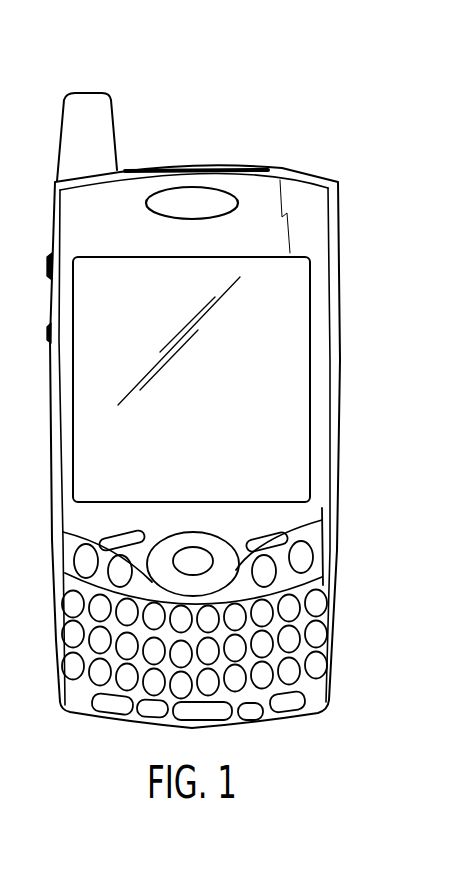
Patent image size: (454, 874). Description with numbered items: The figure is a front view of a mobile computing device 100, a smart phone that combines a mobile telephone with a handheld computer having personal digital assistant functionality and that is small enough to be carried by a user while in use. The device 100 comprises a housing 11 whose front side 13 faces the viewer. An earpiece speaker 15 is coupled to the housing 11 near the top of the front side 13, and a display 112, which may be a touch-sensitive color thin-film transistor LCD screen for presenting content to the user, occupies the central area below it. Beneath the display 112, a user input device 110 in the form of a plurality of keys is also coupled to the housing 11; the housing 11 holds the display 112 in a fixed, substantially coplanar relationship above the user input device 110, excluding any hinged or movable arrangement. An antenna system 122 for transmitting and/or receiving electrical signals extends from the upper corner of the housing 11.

The mobile computing device 100 is at (227, 378).
The housing 11 is at (307, 205).
The front side 13 is at (107, 234).
The earpiece speaker 15 is at (192, 198).
The user input device 110 is at (313, 635).
The display 112 is at (295, 340).
The antenna system 122 is at (112, 123).